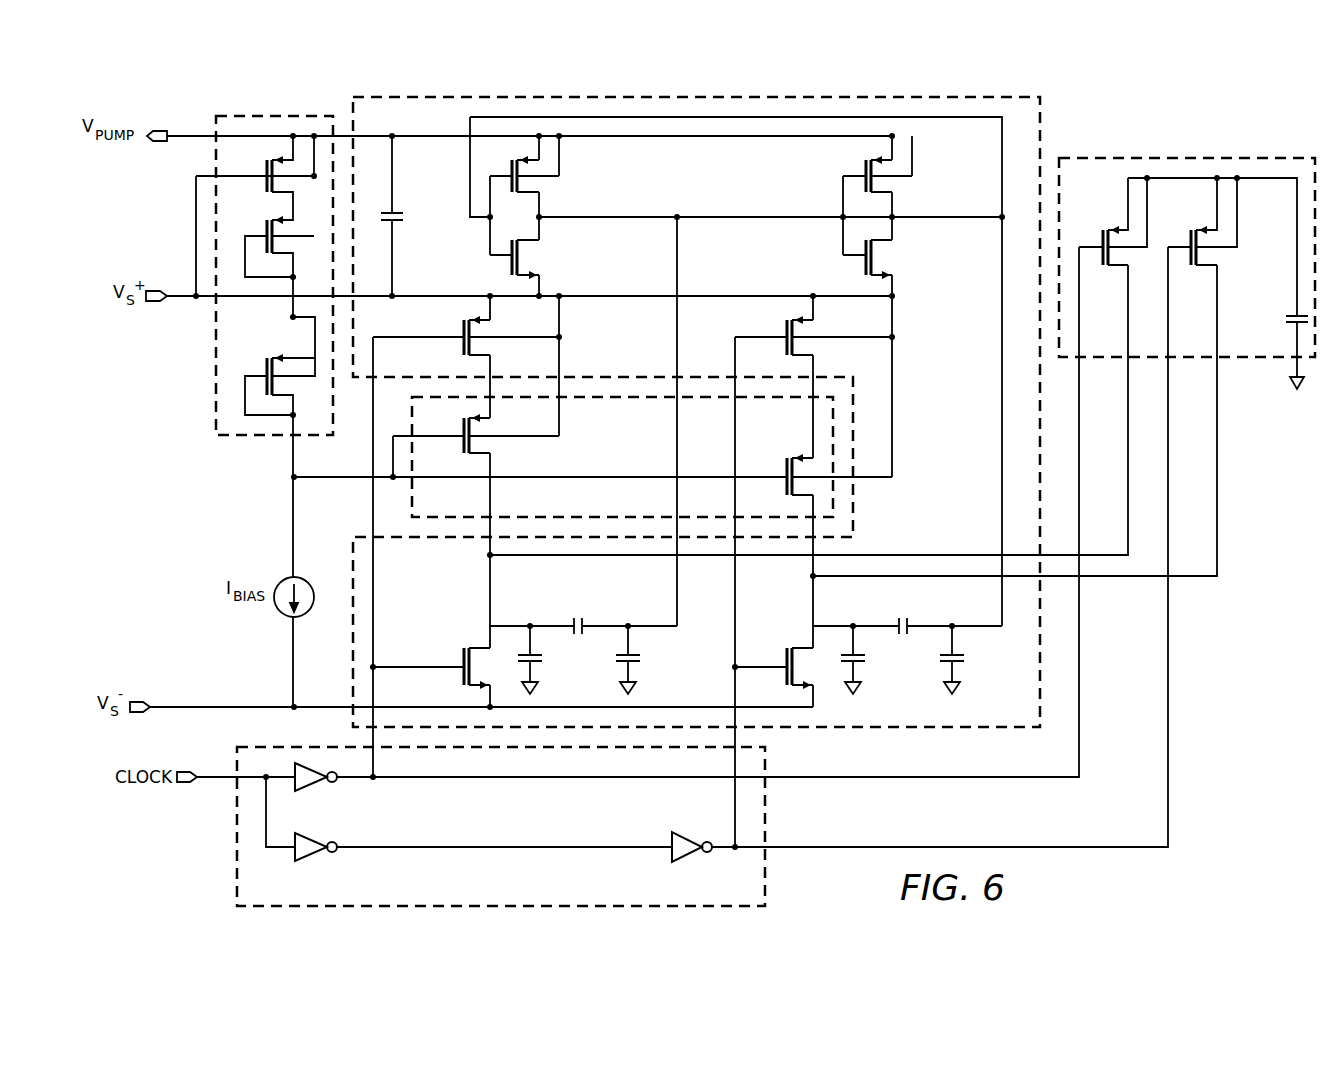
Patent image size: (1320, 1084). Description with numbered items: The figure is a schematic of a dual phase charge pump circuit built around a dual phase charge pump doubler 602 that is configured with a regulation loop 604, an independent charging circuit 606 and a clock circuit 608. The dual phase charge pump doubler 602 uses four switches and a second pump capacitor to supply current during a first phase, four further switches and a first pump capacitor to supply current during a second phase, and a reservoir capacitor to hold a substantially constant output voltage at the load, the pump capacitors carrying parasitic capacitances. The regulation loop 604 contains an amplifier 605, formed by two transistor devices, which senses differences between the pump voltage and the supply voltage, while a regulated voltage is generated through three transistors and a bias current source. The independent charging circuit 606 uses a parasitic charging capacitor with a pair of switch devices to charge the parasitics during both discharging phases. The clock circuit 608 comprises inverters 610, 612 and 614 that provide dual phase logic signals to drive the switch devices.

The dual phase charge pump doubler 602 is at (755, 473).
The regulation loop 604 is at (213, 343).
The amplifier 605 is at (407, 492).
The independent charging circuit 606 is at (1200, 153).
The clock circuit 608 is at (464, 826).
The inverter 610 is at (316, 791).
The inverter 612 is at (316, 861).
The inverter 614 is at (690, 861).